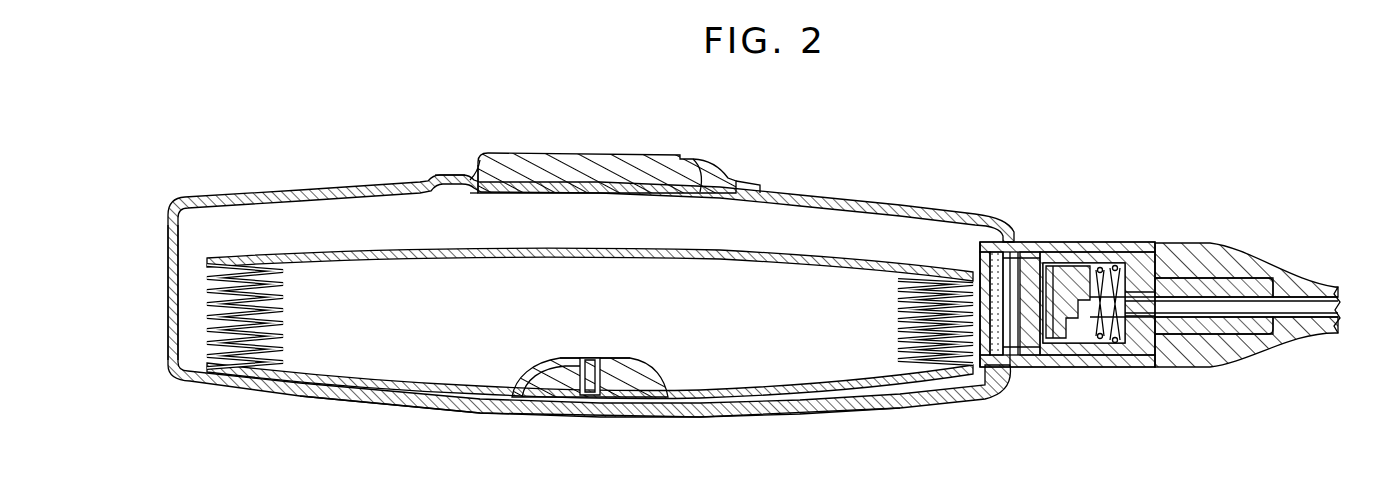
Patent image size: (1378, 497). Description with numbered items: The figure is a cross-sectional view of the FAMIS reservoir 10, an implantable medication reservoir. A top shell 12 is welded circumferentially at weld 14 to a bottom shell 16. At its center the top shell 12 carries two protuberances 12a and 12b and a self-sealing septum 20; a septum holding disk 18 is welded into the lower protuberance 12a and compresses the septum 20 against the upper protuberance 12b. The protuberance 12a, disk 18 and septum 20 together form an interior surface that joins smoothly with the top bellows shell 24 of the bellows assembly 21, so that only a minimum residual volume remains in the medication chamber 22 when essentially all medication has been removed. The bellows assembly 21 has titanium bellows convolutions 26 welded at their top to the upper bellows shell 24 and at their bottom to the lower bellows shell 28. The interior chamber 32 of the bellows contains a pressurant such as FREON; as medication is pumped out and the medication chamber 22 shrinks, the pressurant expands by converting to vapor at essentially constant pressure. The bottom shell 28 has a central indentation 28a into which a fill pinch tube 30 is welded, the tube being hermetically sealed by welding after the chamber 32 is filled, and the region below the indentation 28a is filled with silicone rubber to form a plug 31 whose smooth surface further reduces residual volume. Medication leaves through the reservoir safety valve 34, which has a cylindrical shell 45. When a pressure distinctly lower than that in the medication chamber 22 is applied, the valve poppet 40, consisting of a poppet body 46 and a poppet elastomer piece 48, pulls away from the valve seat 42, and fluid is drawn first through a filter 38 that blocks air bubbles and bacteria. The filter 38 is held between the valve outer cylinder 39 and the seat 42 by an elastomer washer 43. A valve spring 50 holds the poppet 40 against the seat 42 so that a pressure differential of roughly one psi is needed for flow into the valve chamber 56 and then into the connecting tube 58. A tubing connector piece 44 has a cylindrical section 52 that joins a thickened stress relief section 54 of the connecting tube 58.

The FAMIS reservoir 10 is at (812, 172).
The top shell 12 is at (355, 183).
The lower protuberance 12a is at (442, 176).
The upper protuberance 12b is at (487, 152).
The weld 14 is at (168, 350).
The bottom shell 16 is at (840, 415).
The septum holding disk 18 is at (473, 194).
The self-sealing septum 20 is at (612, 153).
The bellows assembly 21 is at (590, 310).
The medication chamber 22 is at (716, 230).
The top bellows shell 24 is at (400, 260).
The titanium bellows convolutions 26 is at (285, 318).
The lower bellows shell 28 is at (800, 390).
The indentation 28a is at (548, 368).
The fill pinch tube 30 is at (574, 401).
The plug 31 is at (640, 392).
The interior chamber 32 is at (669, 321).
The reservoir safety valve 34 is at (1052, 298).
The filter 38 is at (978, 272).
The valve outer cylinder 39 is at (1030, 370).
The valve poppet 40 is at (1085, 340).
The valve seat 42 is at (1025, 256).
The elastomer washer 43 is at (1013, 246).
The tubing connector piece 44 is at (1118, 365).
The cylindrical shell 45 is at (1082, 238).
The poppet body 46 is at (1108, 266).
The poppet elastomer piece 48 is at (995, 362).
The valve spring 50 is at (1135, 252).
The cylindrical section 52 is at (1225, 256).
The stress relief section 54 is at (1215, 370).
The valve chamber 56 is at (1153, 363).
The connecting tube 58 is at (1310, 287).